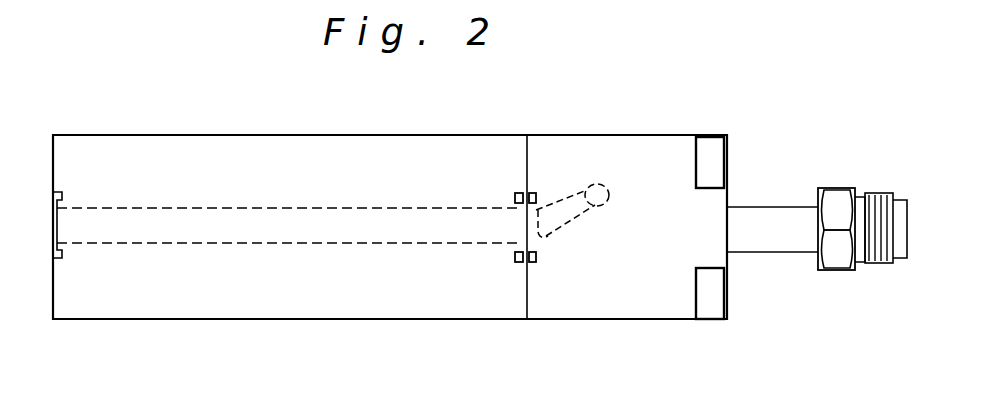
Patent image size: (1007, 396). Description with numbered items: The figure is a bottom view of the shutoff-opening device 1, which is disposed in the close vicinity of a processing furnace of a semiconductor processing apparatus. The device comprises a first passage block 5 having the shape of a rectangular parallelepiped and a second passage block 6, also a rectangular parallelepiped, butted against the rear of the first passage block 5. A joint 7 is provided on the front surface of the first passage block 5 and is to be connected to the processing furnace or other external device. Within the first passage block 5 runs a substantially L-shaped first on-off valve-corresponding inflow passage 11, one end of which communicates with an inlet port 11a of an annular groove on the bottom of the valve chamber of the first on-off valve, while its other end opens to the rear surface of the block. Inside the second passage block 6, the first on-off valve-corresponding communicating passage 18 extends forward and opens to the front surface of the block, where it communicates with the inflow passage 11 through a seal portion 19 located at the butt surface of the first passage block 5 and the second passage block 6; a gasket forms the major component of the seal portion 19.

The shutoff-opening device 1 is at (747, 137).
The first passage block 5 is at (618, 320).
The second passage block 6 is at (295, 319).
The joint 7 is at (830, 188).
The first on-off valve-corresponding inflow passage 11 is at (560, 212).
The inlet port 11a is at (598, 187).
The first on-off valve-corresponding communicating passage 18 is at (192, 228).
The seal portion 19 is at (522, 262).